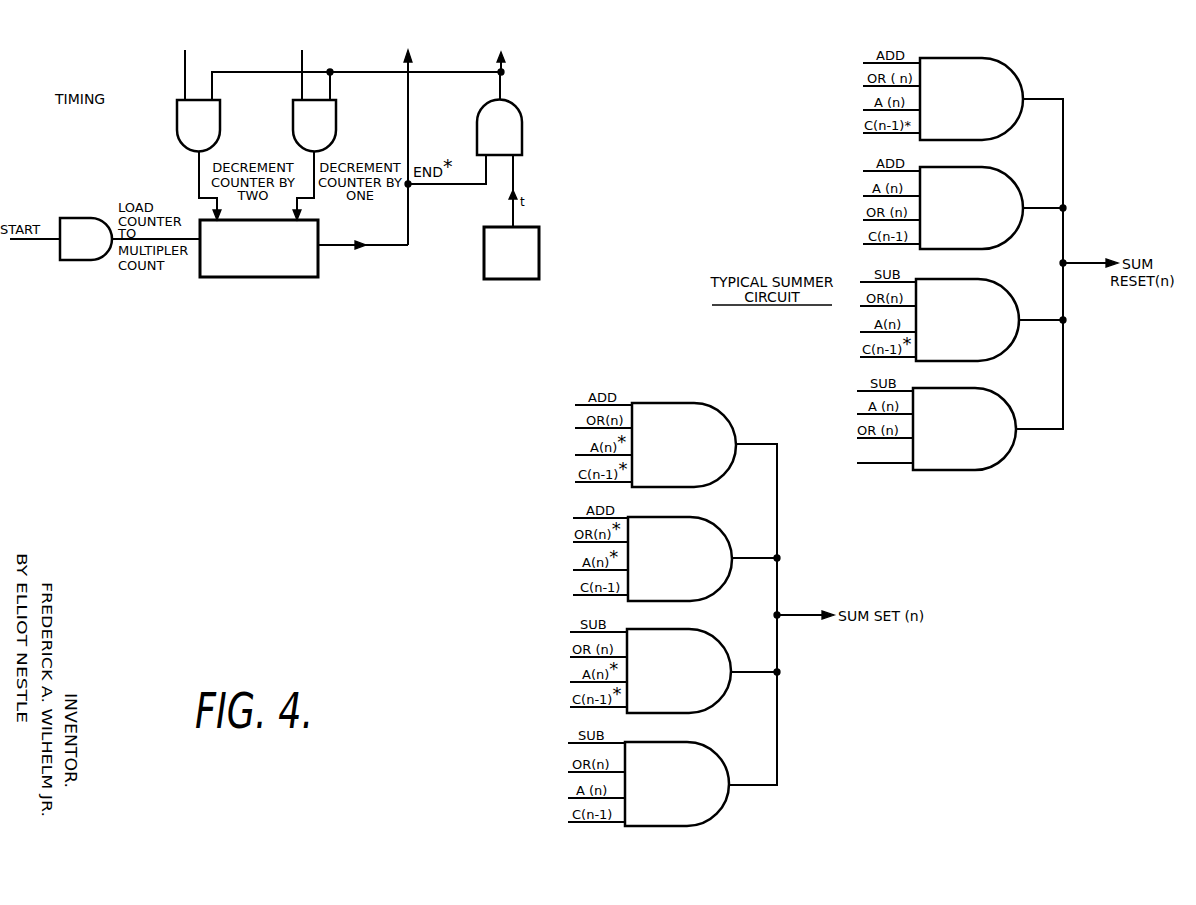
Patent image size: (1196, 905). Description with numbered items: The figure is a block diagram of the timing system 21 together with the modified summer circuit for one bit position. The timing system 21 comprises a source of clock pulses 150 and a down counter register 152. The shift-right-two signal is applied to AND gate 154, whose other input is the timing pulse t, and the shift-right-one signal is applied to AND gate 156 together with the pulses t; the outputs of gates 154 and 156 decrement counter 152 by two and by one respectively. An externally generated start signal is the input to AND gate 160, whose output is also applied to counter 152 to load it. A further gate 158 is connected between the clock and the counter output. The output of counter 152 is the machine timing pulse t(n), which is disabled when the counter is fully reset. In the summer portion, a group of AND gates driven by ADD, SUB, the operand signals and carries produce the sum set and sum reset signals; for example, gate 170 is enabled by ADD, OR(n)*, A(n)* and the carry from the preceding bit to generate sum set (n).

The timing system 21 is at (390, 154).
The source of clock pulses 150 is at (541, 233).
The down counter register 152 is at (320, 251).
The AND gate 154 is at (218, 115).
The AND gate 156 is at (335, 115).
The AND gate (end) 158 is at (521, 118).
The AND gate 160 is at (66, 219).
The gate 170 is at (686, 516).